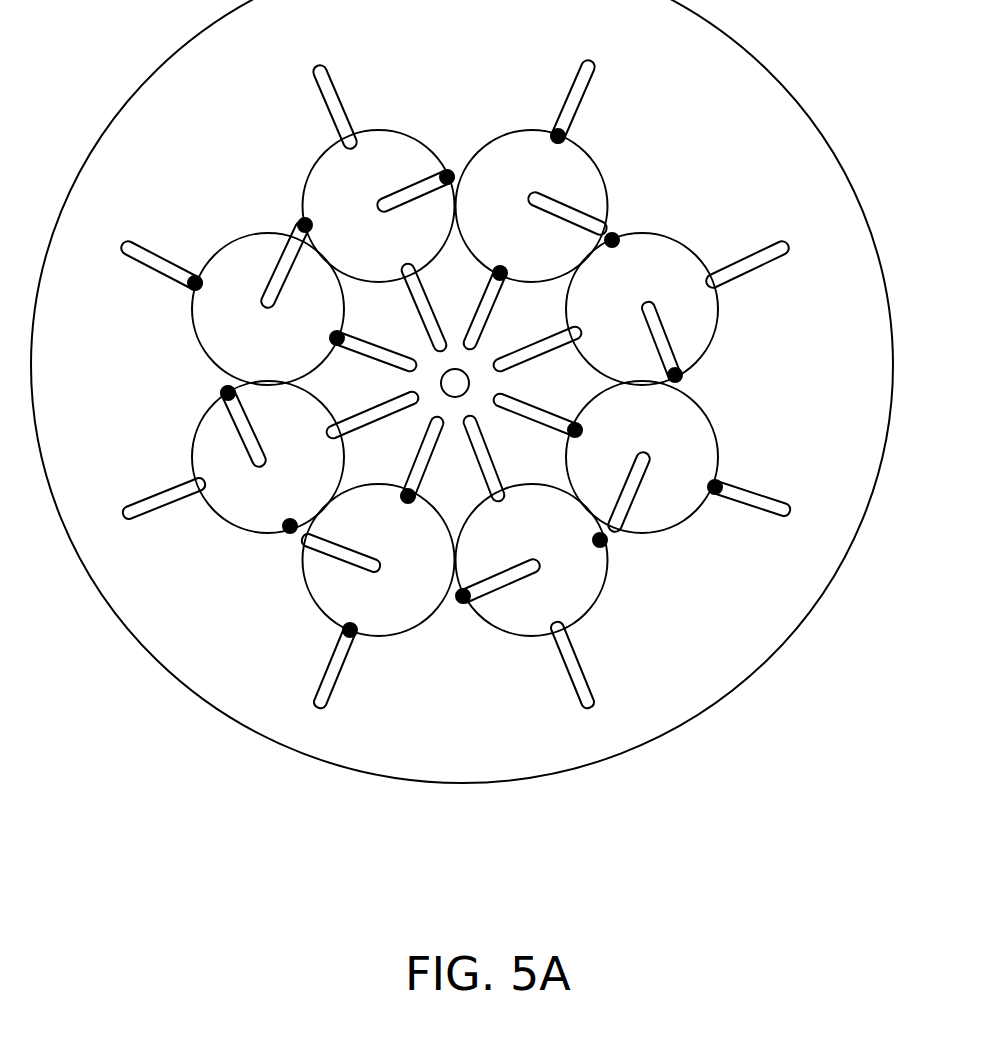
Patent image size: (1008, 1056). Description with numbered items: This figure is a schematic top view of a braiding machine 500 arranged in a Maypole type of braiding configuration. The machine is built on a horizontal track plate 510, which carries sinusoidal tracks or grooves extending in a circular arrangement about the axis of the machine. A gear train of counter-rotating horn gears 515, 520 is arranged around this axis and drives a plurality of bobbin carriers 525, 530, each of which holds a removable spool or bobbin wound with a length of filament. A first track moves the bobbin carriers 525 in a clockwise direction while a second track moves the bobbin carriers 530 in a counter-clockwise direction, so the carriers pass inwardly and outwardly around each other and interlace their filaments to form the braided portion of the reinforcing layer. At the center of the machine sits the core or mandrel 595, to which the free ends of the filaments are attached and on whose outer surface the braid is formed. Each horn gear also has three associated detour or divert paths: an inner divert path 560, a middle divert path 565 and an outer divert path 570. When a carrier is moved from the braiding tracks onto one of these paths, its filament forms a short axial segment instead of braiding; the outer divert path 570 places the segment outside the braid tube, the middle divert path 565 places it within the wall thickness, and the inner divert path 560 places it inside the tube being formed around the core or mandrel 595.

The braiding machine 500 is at (300, 835).
The horizontal track plate 510 is at (748, 678).
The horn gear 515 is at (710, 450).
The horn gear 520 is at (712, 317).
The bobbin carrier 525 is at (568, 140).
The bobbin carrier 530 is at (447, 170).
The inner divert path 560 is at (477, 462).
The middle divert path 565 is at (303, 572).
The outer divert path 570 is at (590, 88).
The core or mandrel 595 is at (422, 413).